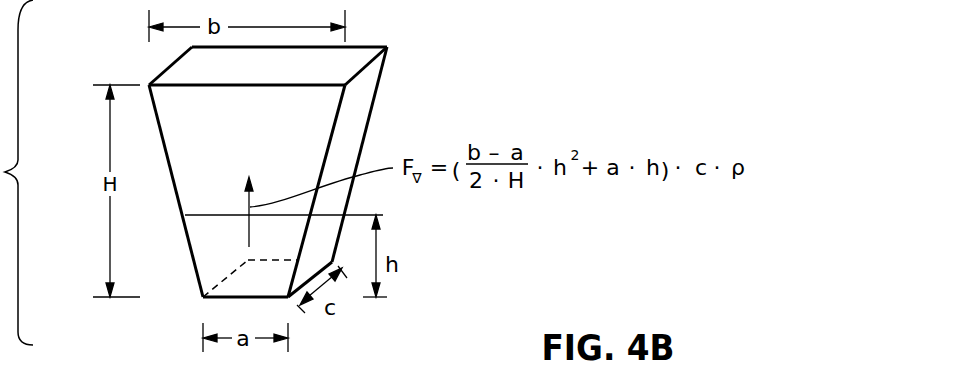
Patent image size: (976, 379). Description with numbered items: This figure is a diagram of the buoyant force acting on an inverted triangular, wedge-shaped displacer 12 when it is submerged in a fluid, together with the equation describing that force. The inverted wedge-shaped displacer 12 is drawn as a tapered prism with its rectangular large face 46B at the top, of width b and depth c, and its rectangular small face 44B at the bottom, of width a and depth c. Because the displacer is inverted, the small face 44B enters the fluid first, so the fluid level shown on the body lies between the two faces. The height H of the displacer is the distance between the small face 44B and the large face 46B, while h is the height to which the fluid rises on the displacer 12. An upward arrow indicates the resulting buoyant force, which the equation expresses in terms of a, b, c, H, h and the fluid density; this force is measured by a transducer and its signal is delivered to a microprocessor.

The inverted wedge-shaped displacer 12 is at (362, 116).
The rectangular large face 46B is at (357, 58).
The rectangular small face 44B is at (246, 298).